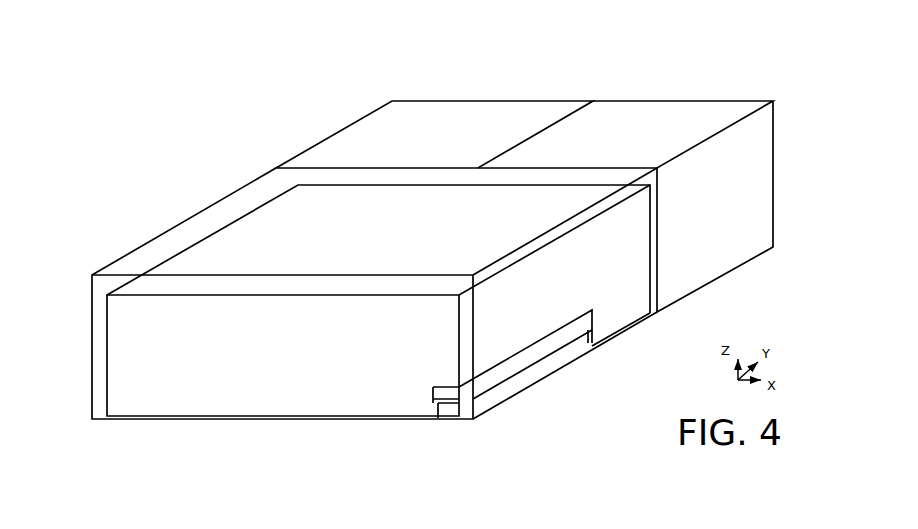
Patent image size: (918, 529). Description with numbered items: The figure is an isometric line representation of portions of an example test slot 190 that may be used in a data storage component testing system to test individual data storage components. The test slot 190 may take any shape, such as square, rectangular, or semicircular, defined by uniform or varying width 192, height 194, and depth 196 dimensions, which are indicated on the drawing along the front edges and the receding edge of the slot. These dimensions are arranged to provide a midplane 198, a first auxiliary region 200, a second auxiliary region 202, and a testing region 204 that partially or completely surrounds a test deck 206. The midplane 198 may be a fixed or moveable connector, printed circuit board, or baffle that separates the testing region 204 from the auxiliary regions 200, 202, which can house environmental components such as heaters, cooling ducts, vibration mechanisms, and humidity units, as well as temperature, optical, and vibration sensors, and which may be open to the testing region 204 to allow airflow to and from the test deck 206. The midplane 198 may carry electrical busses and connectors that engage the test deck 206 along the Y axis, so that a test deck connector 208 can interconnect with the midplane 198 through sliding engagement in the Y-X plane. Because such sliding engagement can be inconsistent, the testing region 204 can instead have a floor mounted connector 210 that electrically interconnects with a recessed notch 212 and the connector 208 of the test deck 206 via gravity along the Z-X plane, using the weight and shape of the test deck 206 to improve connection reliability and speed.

The test slot 190 is at (137, 93).
The width 192 is at (473, 432).
The height 194 is at (81, 275).
The depth 196 is at (84, 271).
The midplane 198 is at (657, 236).
The first auxiliary region 200 is at (440, 144).
The second auxiliary region 202 is at (641, 146).
The testing region 204 is at (165, 250).
The test deck 206 is at (301, 365).
The test deck connector 208 is at (533, 345).
The floor mounted connector 210 is at (554, 369).
The recessed notch 212 is at (597, 340).